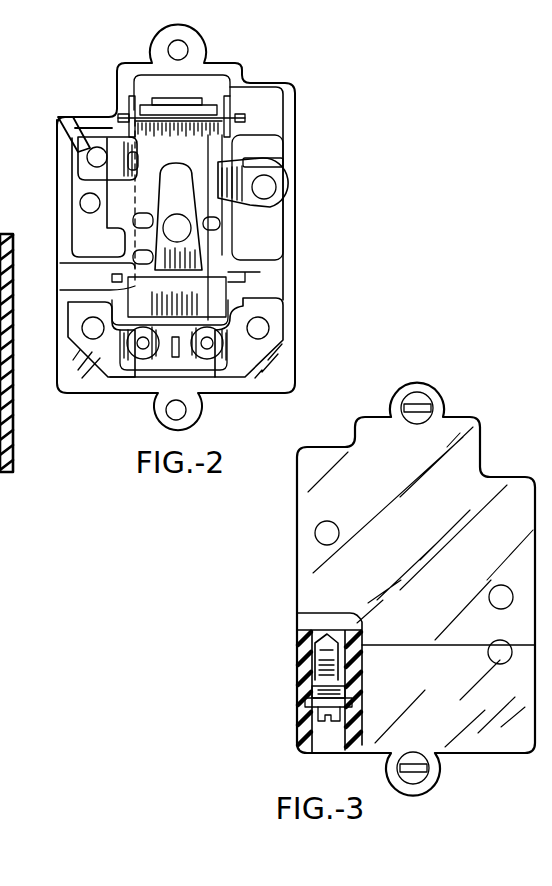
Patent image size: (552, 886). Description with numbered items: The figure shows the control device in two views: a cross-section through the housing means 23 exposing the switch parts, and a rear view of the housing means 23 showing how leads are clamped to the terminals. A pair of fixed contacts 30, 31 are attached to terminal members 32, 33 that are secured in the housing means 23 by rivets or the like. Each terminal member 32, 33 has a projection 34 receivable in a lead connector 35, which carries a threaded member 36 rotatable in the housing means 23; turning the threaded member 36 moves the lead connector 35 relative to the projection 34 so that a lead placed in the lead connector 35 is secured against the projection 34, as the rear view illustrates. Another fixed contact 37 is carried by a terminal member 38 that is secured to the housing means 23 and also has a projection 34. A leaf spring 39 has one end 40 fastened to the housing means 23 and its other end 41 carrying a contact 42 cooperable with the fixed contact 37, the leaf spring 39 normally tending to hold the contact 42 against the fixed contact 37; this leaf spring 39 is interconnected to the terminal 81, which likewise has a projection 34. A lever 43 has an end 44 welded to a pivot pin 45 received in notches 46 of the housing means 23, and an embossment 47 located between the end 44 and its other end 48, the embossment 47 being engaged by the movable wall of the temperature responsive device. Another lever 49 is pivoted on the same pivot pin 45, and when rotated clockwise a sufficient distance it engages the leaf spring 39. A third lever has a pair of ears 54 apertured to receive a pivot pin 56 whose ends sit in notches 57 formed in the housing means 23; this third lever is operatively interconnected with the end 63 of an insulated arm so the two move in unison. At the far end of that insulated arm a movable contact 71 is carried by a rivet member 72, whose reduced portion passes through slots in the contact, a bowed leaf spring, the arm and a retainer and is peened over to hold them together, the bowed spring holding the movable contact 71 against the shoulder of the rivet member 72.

In FIG. 2, the housing means 23 is at (292, 195).
In FIG. 3, the housing means 23 is at (295, 646).
In FIG. 2, the fixed contact 30 is at (150, 360).
In FIG. 2, the fixed contact 31 is at (250, 375).
In FIG. 2, the terminal member 32 is at (80, 318).
In FIG. 2, the terminal member 33 is at (282, 311).
In FIG. 3, the projection 34 is at (327, 660).
In FIG. 3, the lead connector 35 is at (312, 680).
In FIG. 3, the threaded member 36 is at (317, 720).
In FIG. 2, the fixed contact 37 is at (76, 168).
In FIG. 2, the terminal member 38 is at (78, 188).
In FIG. 2, the leaf spring 39 is at (255, 173).
In FIG. 2, the end of leaf spring 40 is at (274, 181).
In FIG. 2, the end of leaf spring 41 is at (112, 137).
In FIG. 2, the contact 42 is at (80, 134).
In FIG. 2, the lever 43 is at (167, 206).
In FIG. 2, the end of lever 44 is at (163, 294).
In FIG. 2, the pivot pin 45 is at (112, 279).
In FIG. 2, the notches 46 is at (62, 296).
In FIG. 2, the embossment 47 is at (180, 228).
In FIG. 2, the end of lever 48 is at (178, 143).
In FIG. 2, the lever 49 is at (62, 264).
In FIG. 2, the ears 54 is at (130, 100).
In FIG. 2, the pivot pin 56 is at (201, 112).
In FIG. 2, the notches 57 is at (115, 107).
In FIG. 2, the end of arm 63 is at (194, 100).
In FIG. 2, the movable contact 71 is at (183, 363).
In FIG. 2, the rivet member 72 is at (162, 363).
In FIG. 2, the terminal 81 is at (266, 160).